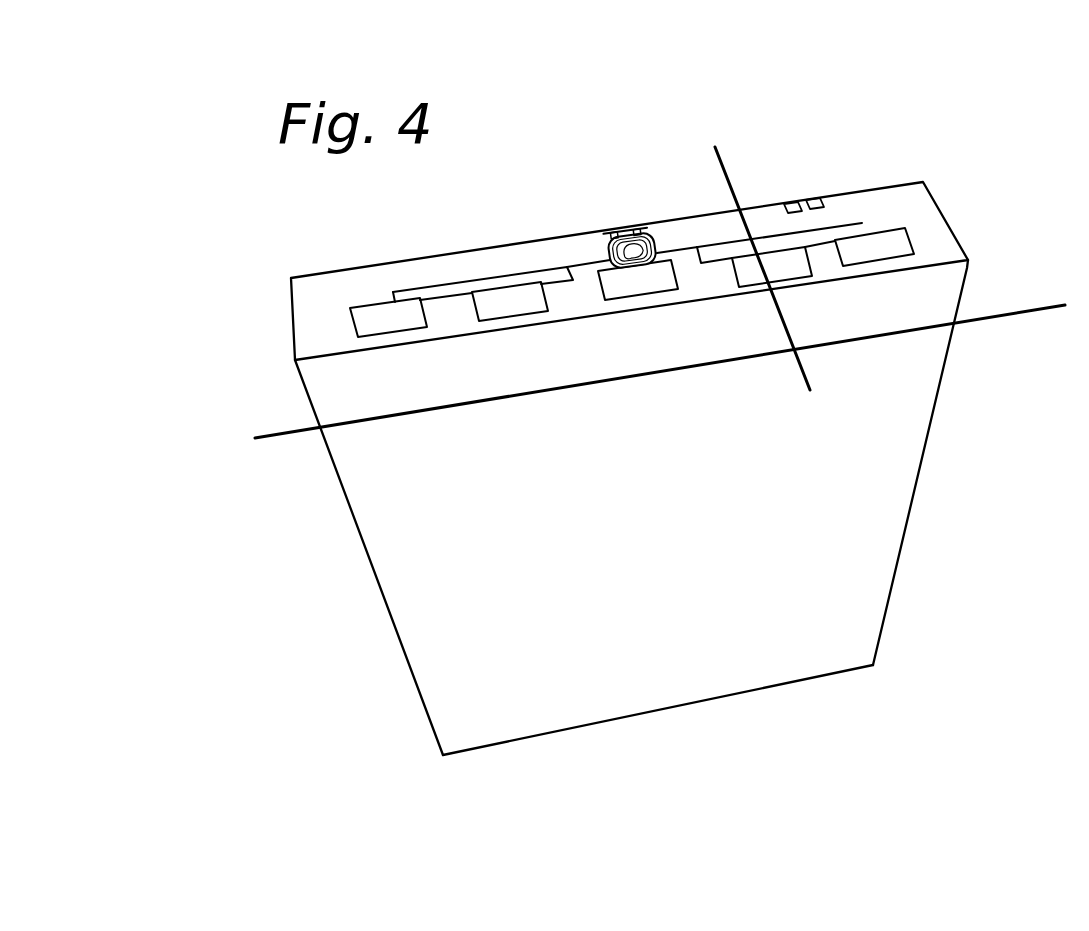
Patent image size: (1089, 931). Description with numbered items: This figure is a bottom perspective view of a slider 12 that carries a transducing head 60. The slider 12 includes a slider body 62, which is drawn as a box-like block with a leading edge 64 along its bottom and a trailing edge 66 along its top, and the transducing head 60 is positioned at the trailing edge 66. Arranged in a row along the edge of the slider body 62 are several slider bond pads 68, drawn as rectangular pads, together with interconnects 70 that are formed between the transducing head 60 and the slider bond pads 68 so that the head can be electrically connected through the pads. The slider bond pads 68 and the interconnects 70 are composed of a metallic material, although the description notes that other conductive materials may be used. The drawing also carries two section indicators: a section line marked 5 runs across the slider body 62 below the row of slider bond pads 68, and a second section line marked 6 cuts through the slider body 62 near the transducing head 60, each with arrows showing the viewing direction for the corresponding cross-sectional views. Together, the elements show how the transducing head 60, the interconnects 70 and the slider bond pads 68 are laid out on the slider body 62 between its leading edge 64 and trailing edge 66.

The slider 12 is at (566, 157).
The section line 5- 5 is at (255, 413).
The section line 6- 6 is at (740, 142).
The transducing head 60 is at (645, 228).
The slider body 62 is at (852, 413).
The leading edge 64 is at (640, 713).
The trailing edge 66 is at (887, 210).
The slider bond pads 68 is at (510, 308).
The interconnects 70 is at (548, 270).